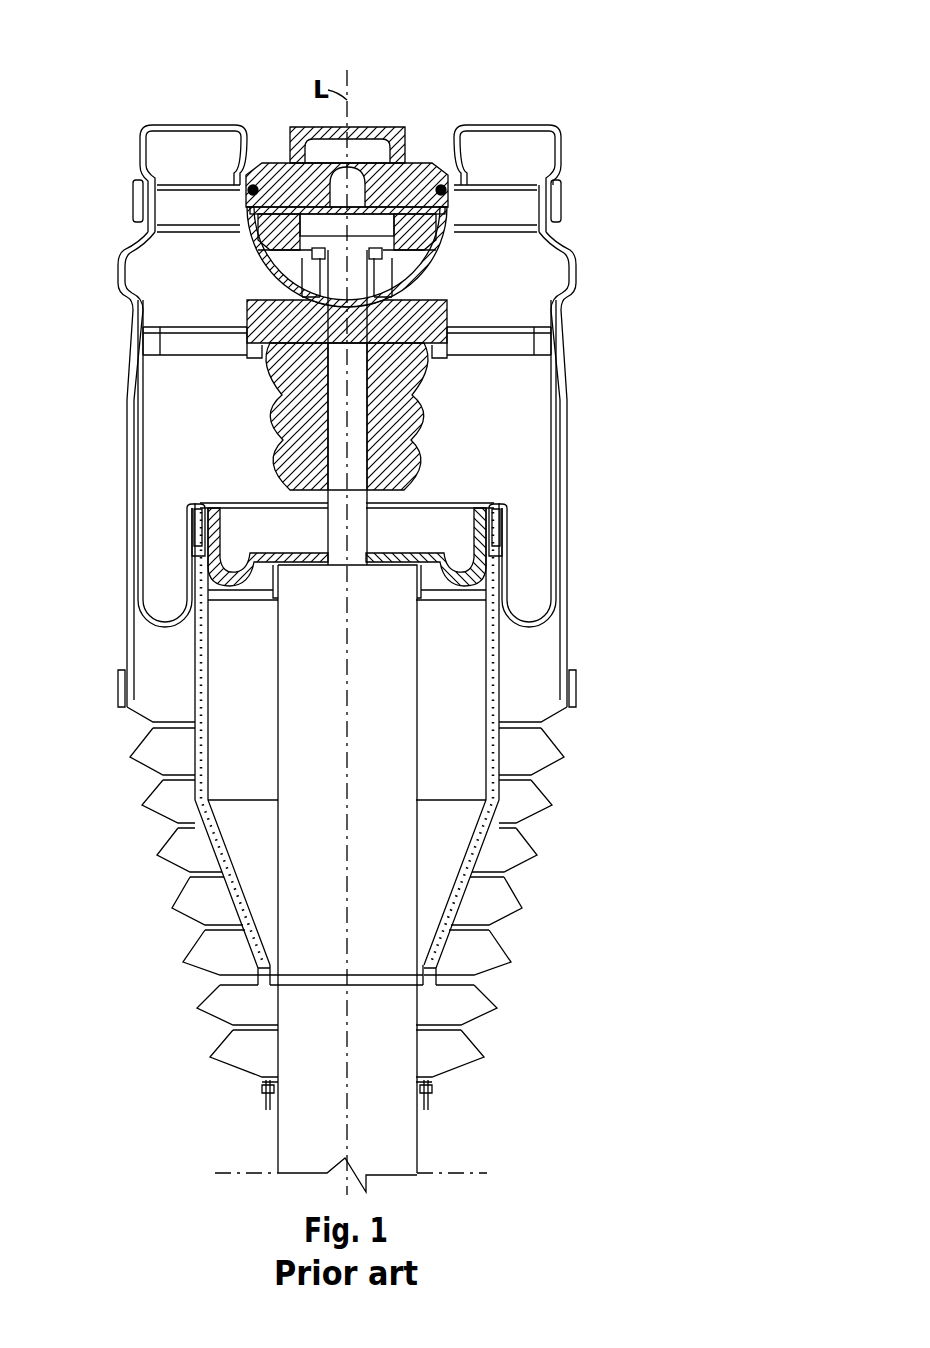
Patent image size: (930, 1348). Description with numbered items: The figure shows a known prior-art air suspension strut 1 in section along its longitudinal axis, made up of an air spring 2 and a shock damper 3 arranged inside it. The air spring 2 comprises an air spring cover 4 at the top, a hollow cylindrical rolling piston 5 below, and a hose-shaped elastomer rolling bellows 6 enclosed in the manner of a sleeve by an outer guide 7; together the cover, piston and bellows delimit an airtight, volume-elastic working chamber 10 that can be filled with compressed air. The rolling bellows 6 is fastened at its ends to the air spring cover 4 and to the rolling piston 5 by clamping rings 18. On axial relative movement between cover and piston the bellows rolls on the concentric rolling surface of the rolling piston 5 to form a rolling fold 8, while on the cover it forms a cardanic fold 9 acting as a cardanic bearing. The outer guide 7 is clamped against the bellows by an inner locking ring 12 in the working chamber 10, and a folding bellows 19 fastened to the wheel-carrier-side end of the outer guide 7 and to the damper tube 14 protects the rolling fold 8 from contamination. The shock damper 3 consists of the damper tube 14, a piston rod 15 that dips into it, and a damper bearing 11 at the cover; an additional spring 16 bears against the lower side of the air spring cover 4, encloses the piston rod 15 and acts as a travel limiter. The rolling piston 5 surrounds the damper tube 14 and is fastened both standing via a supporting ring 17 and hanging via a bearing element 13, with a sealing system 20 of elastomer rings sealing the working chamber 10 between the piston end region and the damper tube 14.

The air suspension strut 1 is at (158, 68).
The air spring 2 is at (630, 366).
The shock damper 3 is at (266, 1143).
The air spring cover 4 is at (145, 134).
The rolling piston 5 is at (209, 679).
The rolling bellows 6 is at (143, 440).
The outer guide 7 is at (128, 405).
The rolling fold 8 is at (162, 597).
The cardanic fold 9 is at (590, 258).
The working chamber 10 is at (237, 473).
The damper bearing 11 is at (381, 203).
The inner locking ring 12 is at (543, 349).
The bearing element 13 is at (417, 568).
The damper tube 14 is at (390, 1137).
The piston rod 15 is at (362, 538).
The additional spring 16 is at (410, 452).
The supporting ring 17 is at (385, 980).
The clamping rings 18 is at (561, 207).
The folding bellows 19 is at (135, 768).
The sealing system 20 is at (268, 952).